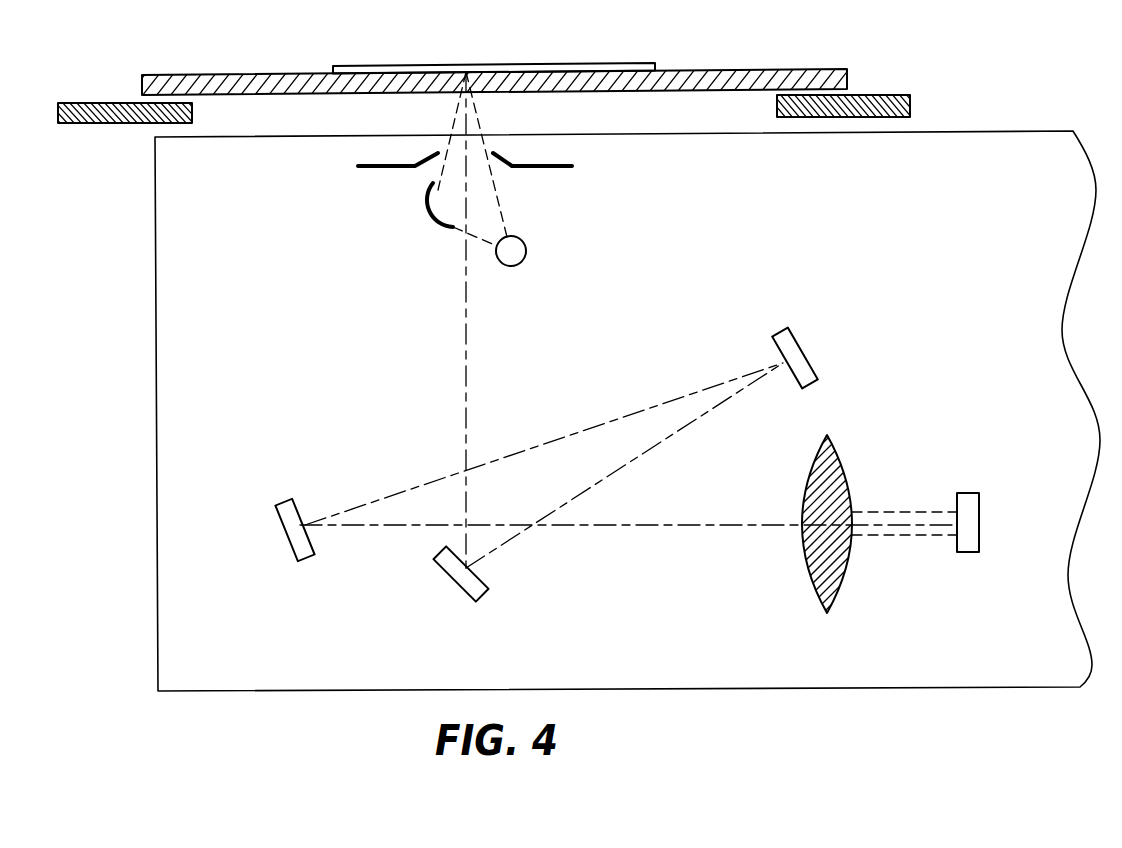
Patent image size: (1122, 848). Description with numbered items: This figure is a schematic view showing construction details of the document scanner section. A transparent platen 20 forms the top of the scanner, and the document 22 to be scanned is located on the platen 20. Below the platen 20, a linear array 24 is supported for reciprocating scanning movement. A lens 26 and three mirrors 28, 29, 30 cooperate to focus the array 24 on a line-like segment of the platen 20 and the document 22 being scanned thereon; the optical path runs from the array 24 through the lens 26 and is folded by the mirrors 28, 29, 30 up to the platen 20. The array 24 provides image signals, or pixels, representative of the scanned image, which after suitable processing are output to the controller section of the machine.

The transparent platen 20 is at (257, 94).
The document 22 is at (548, 64).
The linear array 24 is at (970, 493).
The lens 26 is at (840, 578).
The mirror 28 is at (462, 593).
The mirror 29 is at (805, 352).
The mirror 30 is at (286, 540).